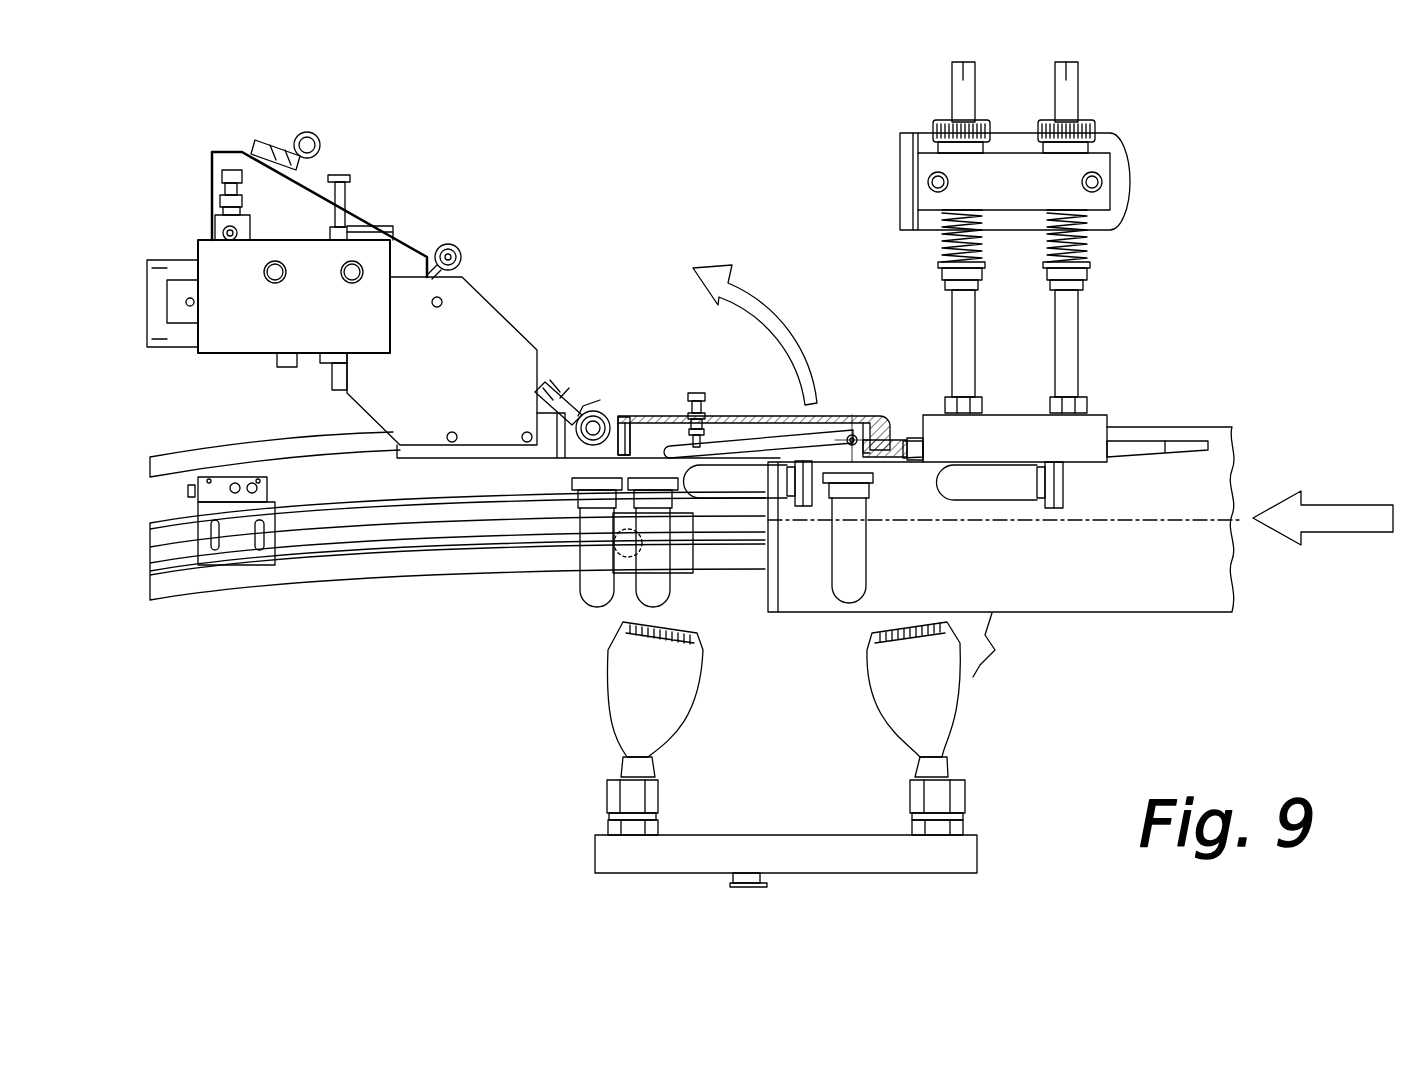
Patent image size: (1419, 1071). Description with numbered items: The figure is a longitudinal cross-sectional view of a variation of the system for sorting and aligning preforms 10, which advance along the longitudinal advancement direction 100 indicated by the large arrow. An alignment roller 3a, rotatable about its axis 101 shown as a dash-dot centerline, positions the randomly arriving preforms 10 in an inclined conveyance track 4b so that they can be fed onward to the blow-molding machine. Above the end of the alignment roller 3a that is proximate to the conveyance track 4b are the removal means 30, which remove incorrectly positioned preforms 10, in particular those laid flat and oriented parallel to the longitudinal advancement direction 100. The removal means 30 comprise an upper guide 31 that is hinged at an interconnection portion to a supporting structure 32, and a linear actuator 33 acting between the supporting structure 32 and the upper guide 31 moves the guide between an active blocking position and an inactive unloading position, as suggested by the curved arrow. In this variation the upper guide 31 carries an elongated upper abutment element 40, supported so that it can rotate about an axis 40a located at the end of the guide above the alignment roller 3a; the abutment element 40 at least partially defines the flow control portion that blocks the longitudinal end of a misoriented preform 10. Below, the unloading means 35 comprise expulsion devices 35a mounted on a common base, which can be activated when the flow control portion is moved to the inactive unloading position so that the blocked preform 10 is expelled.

The alignment roller 3a is at (1090, 563).
The conveyance track 4b is at (338, 487).
The preform 10 is at (566, 584).
The removal means 30 is at (738, 413).
The upper guide 31 is at (853, 410).
The supporting structure 32 is at (478, 347).
The linear actuator 33 is at (570, 387).
The unloading means 35 is at (692, 888).
The expulsion device 35a is at (653, 678).
The elongated upper abutment element 40 is at (737, 450).
The axis 40a is at (873, 417).
The longitudinal advancement direction 100 is at (1336, 524).
The axis 101 is at (1200, 523).